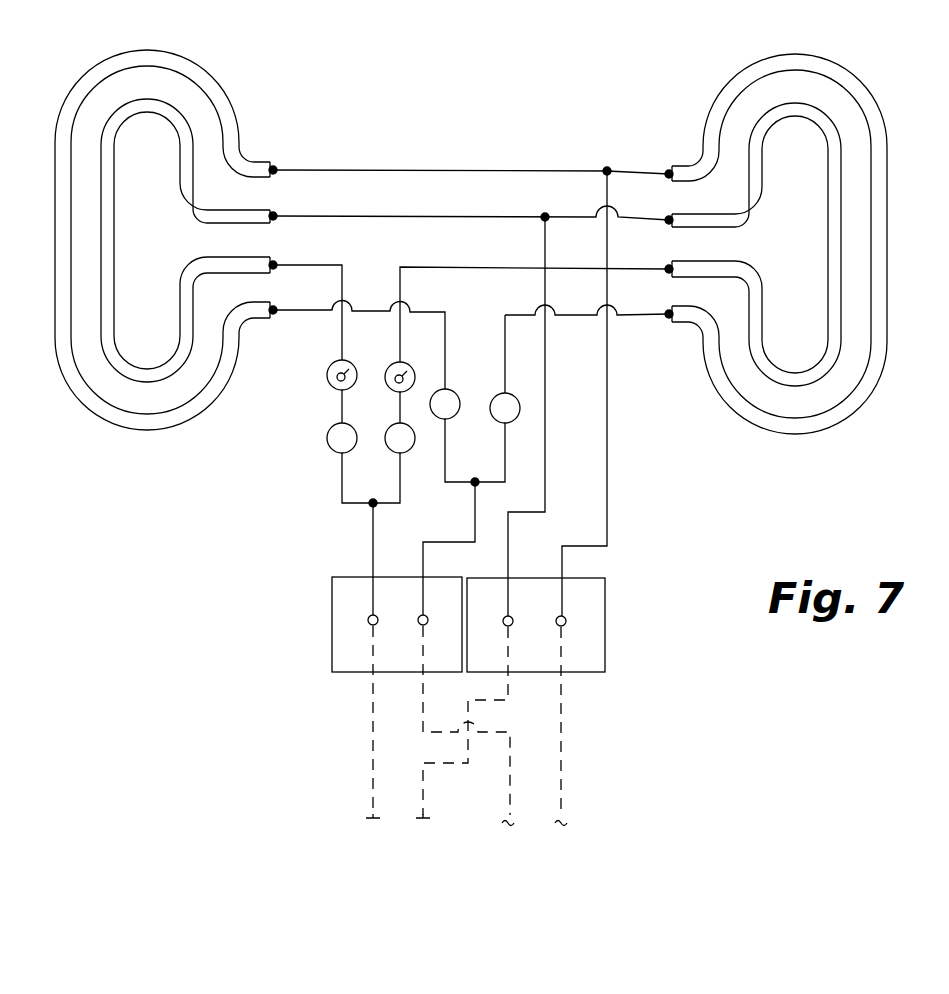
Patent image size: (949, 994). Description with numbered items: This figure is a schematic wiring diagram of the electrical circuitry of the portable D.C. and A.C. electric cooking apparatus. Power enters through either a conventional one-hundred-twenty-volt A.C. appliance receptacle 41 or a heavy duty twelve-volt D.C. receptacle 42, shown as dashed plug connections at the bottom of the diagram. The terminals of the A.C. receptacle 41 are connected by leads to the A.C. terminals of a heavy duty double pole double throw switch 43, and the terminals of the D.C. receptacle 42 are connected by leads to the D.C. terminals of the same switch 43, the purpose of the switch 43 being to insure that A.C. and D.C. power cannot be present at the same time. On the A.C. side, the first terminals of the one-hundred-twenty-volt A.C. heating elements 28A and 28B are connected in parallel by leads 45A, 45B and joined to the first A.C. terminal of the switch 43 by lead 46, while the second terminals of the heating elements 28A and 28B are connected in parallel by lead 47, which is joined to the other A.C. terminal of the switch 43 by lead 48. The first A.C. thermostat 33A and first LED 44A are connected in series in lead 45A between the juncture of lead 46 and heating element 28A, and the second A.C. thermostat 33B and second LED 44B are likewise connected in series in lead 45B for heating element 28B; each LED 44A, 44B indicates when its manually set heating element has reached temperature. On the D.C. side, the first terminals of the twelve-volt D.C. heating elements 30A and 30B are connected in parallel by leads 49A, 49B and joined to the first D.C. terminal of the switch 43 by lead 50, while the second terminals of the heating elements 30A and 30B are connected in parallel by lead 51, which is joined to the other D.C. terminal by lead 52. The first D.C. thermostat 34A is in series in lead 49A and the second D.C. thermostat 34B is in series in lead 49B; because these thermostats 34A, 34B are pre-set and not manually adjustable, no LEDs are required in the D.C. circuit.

The 12V D.C. heating element 30A is at (197, 64).
The 12V D.C. heating element 30B is at (857, 80).
The 120V A.C. heating element 28A is at (113, 213).
The 120V A.C. heating element 28B is at (826, 262).
The lead 47 is at (537, 170).
The lead 48 is at (610, 437).
The lead 51 is at (517, 193).
The lead 52 is at (548, 437).
The lead 45A is at (293, 263).
The lead 45B is at (423, 266).
The first LED 44A is at (328, 370).
The second LED 44B is at (388, 378).
The first 120V A.C. thermostat 33A is at (337, 452).
The second 120V A.C. thermostat 33B is at (412, 453).
The first 12V D.C. thermostat 34A is at (458, 393).
The second D.C. thermostat 34B is at (492, 423).
The lead 46 is at (372, 538).
The lead 49A is at (427, 283).
The lead 49B is at (505, 318).
The lead 50 is at (437, 542).
The DPDT switch 43 is at (607, 593).
The 120V A.C. electrical appliance receptacle 41 is at (404, 749).
The 12V D.C. electrical receptacle 42 is at (522, 749).